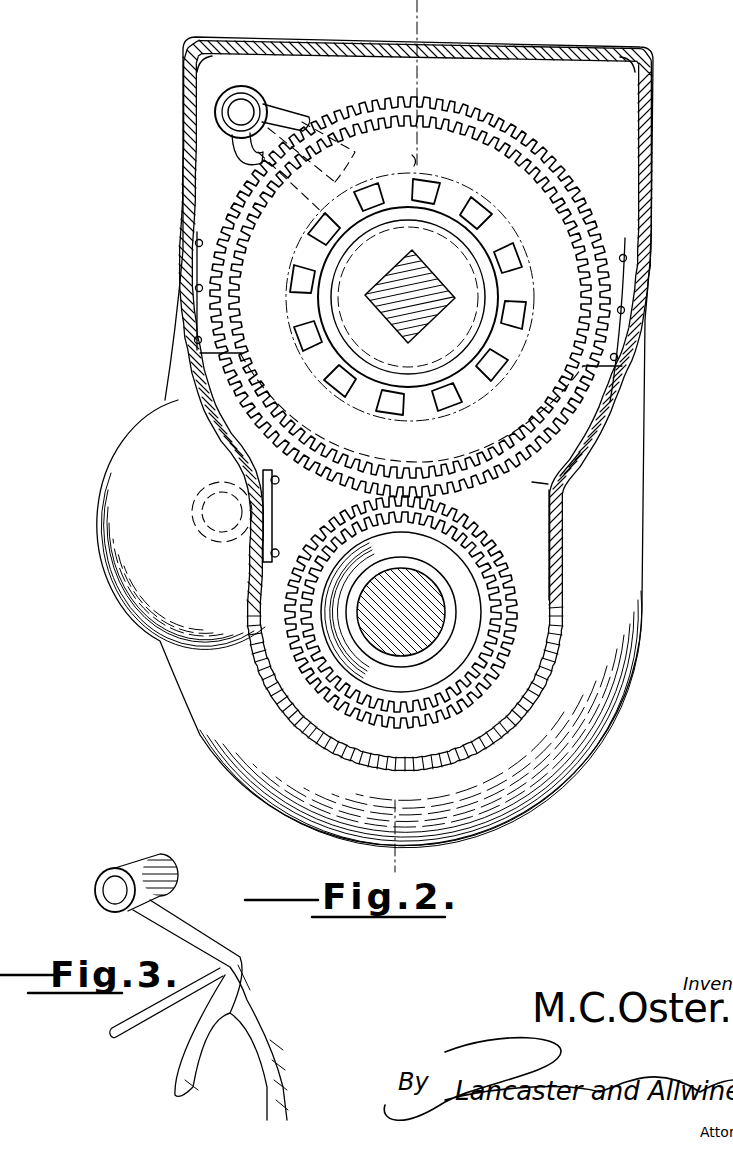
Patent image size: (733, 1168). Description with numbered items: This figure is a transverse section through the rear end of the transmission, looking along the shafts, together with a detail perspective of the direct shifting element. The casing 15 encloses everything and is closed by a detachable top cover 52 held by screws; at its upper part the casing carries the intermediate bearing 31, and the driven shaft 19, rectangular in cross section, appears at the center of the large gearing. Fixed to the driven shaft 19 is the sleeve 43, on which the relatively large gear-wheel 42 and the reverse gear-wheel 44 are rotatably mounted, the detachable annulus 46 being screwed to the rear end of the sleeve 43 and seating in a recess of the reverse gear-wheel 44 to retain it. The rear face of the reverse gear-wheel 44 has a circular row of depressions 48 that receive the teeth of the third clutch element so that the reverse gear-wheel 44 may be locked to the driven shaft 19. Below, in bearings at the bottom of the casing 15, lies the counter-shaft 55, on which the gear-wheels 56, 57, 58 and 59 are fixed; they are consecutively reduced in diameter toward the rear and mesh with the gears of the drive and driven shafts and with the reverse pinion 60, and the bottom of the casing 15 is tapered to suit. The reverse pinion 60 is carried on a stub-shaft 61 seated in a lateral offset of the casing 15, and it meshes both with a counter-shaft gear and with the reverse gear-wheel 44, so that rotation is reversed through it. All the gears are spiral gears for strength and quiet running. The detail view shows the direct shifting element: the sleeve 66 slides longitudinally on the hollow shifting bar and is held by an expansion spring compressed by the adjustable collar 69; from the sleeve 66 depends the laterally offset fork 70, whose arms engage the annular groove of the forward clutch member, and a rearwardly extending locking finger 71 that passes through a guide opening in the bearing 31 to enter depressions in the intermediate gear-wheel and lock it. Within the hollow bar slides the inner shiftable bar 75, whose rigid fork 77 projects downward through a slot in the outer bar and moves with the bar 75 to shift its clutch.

In FIG. 2, the casing 15 is at (652, 176).
In FIG. 2, the driven shaft 19 is at (417, 324).
In FIG. 2, the intermediate bearing 31 is at (618, 275).
In FIG. 2, the gear-wheel 42 is at (590, 382).
In FIG. 2, the sleeve 43 is at (472, 296).
In FIG. 2, the reverse gear-wheel 44 is at (548, 199).
In FIG. 2, the detachable annulus 46 is at (495, 320).
In FIG. 2, the depressions 48 is at (462, 401).
In FIG. 2, the top cover 52 is at (598, 53).
In FIG. 2, the counter-shaft 55 is at (427, 605).
In FIG. 2, the gear-wheel 56 is at (567, 483).
In FIG. 2, the gear-wheel 57 is at (533, 535).
In FIG. 2, the gear-wheel 58 is at (476, 688).
In FIG. 2, the gear-wheel 59 is at (470, 668).
In FIG. 2, the reverse pinion 60 is at (253, 101).
In FIG. 2, the stub-shaft 61 is at (216, 510).
In FIG. 3, the sleeve 66 is at (158, 868).
In FIG. 2, the adjustable collar 69 is at (266, 111).
In FIG. 2, the fork 70 is at (290, 127).
In FIG. 3, the fork 70 is at (230, 1003).
In FIG. 2, the locking finger 71 is at (422, 156).
In FIG. 3, the locking finger 71 is at (172, 1002).
In FIG. 2, the inner shiftable bar 75 is at (238, 122).
In FIG. 2, the rigid fork 77 is at (252, 158).